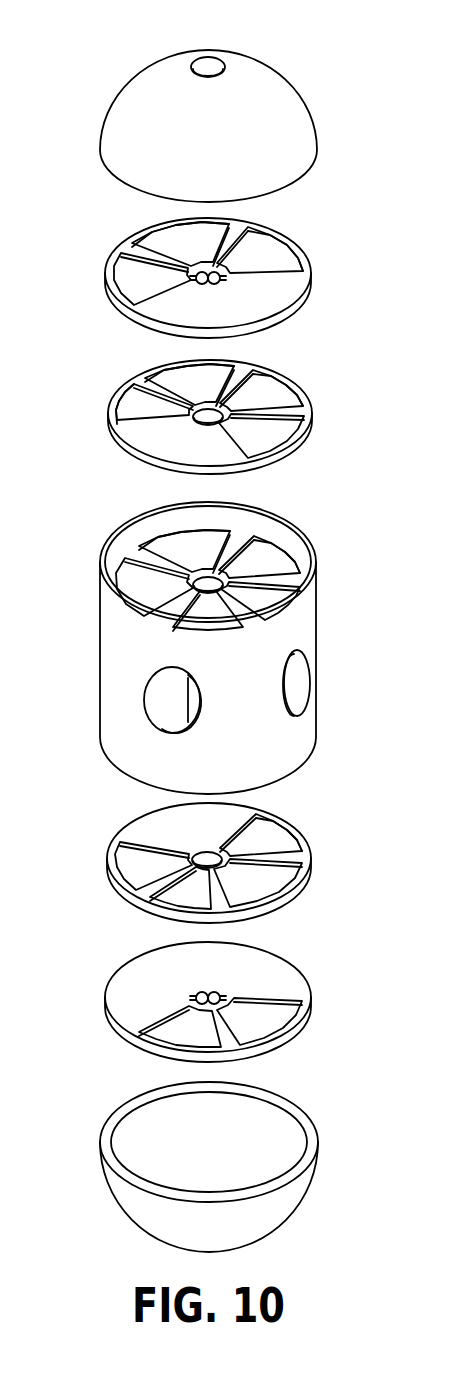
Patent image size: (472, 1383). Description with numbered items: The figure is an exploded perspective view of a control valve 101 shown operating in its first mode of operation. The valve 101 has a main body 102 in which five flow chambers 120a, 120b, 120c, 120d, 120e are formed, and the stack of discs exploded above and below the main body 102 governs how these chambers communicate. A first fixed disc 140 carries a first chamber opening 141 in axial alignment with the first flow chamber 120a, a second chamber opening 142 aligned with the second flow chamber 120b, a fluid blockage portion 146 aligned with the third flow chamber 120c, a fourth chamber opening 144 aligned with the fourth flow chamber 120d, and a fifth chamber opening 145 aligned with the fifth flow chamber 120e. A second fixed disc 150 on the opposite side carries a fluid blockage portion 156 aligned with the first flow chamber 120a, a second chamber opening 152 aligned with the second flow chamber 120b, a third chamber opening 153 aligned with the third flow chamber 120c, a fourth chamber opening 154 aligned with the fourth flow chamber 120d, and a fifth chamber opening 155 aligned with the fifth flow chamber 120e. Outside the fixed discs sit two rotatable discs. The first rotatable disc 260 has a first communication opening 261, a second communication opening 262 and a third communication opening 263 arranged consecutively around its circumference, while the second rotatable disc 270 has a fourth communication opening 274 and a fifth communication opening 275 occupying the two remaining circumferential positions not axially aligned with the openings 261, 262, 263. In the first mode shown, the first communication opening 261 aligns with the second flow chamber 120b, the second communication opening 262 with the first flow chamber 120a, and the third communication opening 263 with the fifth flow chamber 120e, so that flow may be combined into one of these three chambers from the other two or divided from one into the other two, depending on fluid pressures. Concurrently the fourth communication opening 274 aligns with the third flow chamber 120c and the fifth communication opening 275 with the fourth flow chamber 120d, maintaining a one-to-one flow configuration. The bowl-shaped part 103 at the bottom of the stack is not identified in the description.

The valve 101 is at (335, 81).
The main body 102 is at (209, 630).
The first rotatable disc 260 is at (191, 276).
The first communication opening 261 is at (147, 266).
The second communication opening 262 is at (172, 243).
The third communication opening 263 is at (300, 272).
The first fixed disc 140 is at (207, 415).
The first chamber opening 141 is at (163, 378).
The second chamber opening 142 is at (115, 421).
The fourth chamber opening 144 is at (273, 428).
The fifth chamber opening 145 is at (260, 381).
The fluid blockage portion 146 is at (188, 447).
The first flow chamber 120a is at (175, 546).
The second flow chamber 120b is at (128, 579).
The third flow chamber 120c is at (196, 612).
The fourth flow chamber 120d is at (272, 592).
The fifth flow chamber 120e is at (269, 570).
The second fixed disc 150 is at (210, 865).
The second chamber opening 152 is at (112, 866).
The third chamber opening 153 is at (140, 908).
The fourth chamber opening 154 is at (280, 870).
The fifth chamber opening 155 is at (268, 822).
The fluid blockage portion 156 is at (158, 824).
The second rotatable disc 270 is at (221, 1005).
The fourth communication opening 274 is at (148, 1030).
The fifth communication opening 275 is at (275, 1008).
The bottom cap 103 is at (209, 1167).